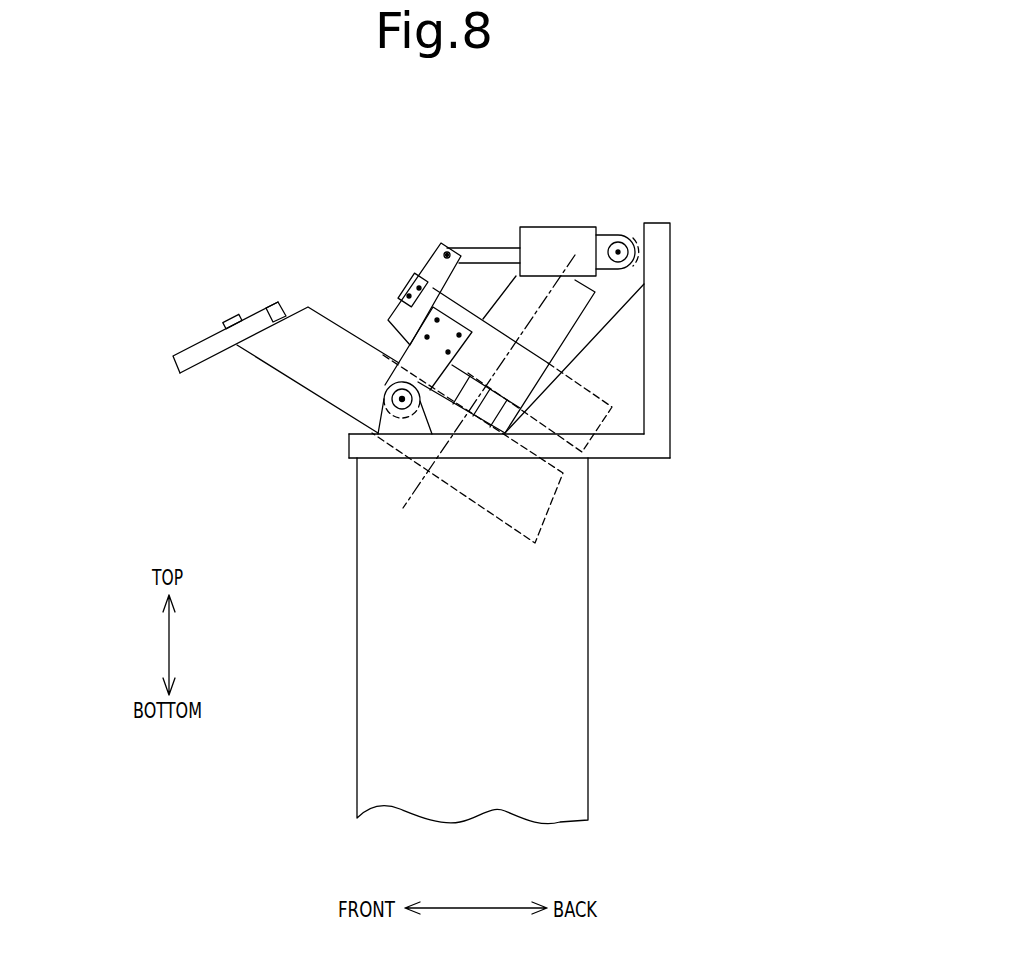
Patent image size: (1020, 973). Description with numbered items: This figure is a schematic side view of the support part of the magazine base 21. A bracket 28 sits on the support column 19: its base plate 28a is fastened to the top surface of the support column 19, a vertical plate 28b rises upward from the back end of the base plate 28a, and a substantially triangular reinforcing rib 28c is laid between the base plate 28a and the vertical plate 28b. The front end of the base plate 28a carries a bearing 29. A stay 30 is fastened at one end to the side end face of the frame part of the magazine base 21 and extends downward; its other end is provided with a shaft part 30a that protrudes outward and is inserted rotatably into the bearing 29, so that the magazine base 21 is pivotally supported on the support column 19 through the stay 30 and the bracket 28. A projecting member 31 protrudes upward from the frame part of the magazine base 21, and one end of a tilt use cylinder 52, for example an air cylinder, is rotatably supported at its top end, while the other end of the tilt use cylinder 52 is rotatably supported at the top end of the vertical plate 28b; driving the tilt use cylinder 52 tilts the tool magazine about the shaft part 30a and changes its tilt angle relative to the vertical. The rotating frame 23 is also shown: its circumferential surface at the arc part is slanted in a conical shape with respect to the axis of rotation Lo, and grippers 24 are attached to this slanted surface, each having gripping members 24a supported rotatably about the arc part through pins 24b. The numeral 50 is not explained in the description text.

The support column 19 is at (567, 765).
The magazine base 21 is at (462, 315).
The rotating frame 23 is at (264, 307).
The gripper 24 is at (170, 305).
The gripping member 24a is at (188, 348).
The pin 24b is at (228, 317).
The bracket 28 is at (511, 371).
The base plate 28a is at (503, 458).
The vertical plate 28b is at (670, 392).
The reinforcing rib 28c is at (623, 358).
The bearing 29 is at (350, 437).
The stay 30 is at (346, 353).
The shaft part 30a is at (382, 385).
The projecting member 31 is at (420, 276).
The actuator 50 is at (510, 285).
The tilt use cylinder 52 is at (552, 227).
The axis of rotation Lo is at (575, 258).